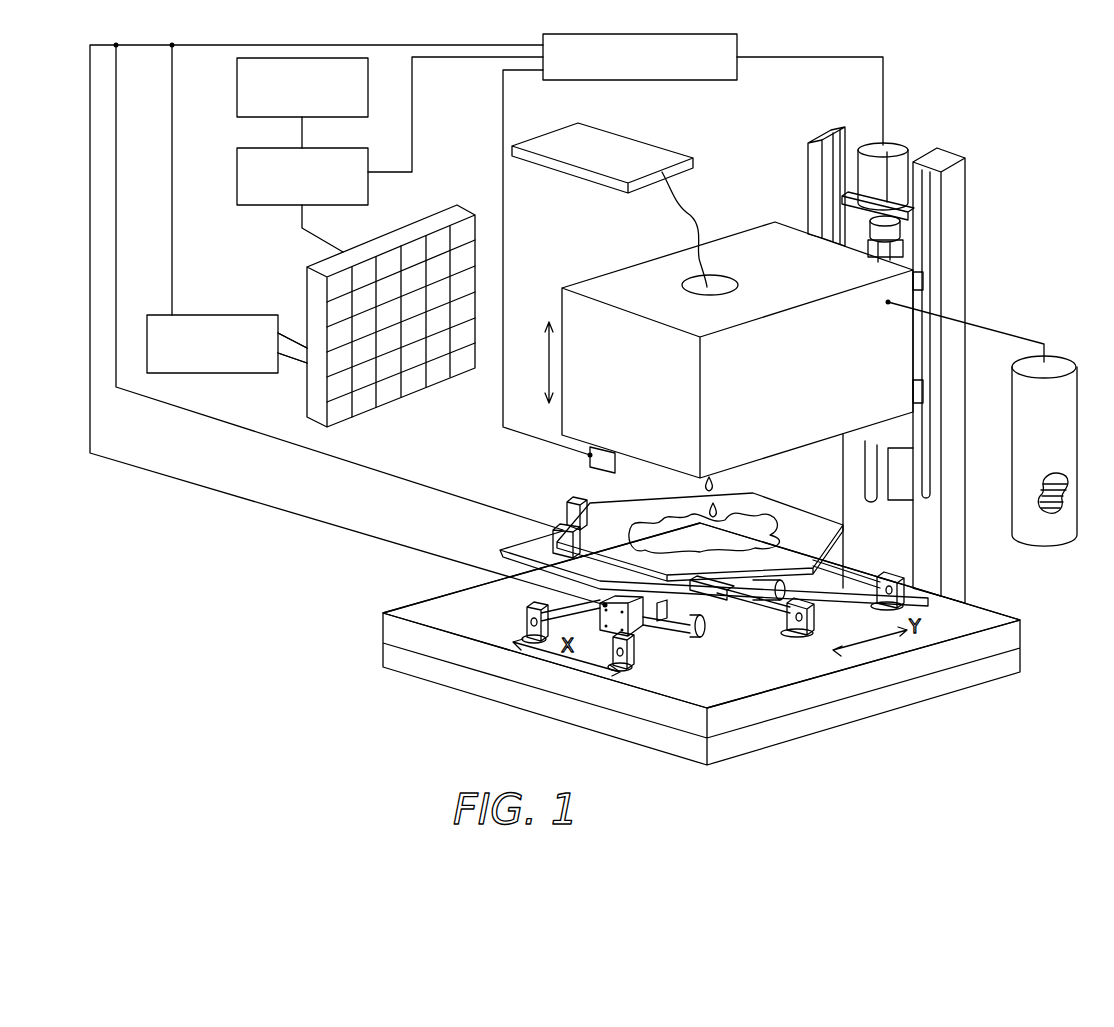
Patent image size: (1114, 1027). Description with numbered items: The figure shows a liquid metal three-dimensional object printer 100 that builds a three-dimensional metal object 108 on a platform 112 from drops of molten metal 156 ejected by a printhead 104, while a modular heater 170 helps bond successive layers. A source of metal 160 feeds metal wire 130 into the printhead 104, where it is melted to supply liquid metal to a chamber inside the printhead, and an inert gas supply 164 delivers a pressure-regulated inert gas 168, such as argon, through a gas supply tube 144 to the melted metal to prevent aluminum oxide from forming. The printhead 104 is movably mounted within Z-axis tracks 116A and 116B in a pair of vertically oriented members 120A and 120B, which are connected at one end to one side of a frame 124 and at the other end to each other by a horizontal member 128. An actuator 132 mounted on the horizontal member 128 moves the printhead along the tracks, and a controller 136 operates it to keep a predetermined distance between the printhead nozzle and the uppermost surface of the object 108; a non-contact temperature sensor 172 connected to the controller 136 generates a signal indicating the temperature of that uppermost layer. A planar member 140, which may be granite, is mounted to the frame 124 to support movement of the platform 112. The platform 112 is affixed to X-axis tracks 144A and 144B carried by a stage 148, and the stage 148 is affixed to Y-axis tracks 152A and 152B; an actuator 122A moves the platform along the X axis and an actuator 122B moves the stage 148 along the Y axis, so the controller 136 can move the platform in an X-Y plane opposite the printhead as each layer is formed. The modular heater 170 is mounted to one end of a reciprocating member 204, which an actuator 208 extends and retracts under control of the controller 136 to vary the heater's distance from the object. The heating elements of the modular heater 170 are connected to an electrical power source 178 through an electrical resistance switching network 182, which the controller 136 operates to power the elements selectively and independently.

The liquid metal 3D object printer 100 is at (970, 129).
The printhead 104 is at (625, 280).
The three-dimensional metal object 108 is at (757, 533).
The platform 112 is at (610, 502).
The Z-axis track 116A is at (808, 160).
The Z-axis track 116B is at (941, 235).
The vertically oriented member 120A is at (813, 199).
The vertically oriented member 120B is at (918, 455).
The actuator 122A is at (553, 532).
The actuator 122B is at (645, 632).
The frame 124 is at (400, 665).
The horizontal member 128 is at (880, 205).
The metal wire 130 is at (692, 220).
The actuator 132 is at (883, 143).
The controller 136 is at (698, 80).
The planar member 140 is at (422, 612).
The gas supply tube 144 is at (1008, 333).
The X-axis track 144A is at (545, 607).
The X-axis track 144B is at (667, 630).
The stage 148 is at (527, 540).
The Y-axis track 152A is at (750, 617).
The Y-axis track 152B is at (868, 571).
The drops of molten metal 156 is at (707, 513).
The source of metal 160 is at (627, 143).
The inert gas supply 164 is at (1012, 440).
The inert gas 168 is at (1057, 510).
The modular heater 170 is at (435, 228).
The non-contact temperature sensor 172 is at (590, 455).
The electrical power source 178 is at (237, 90).
The electrical resistance switching network 182 is at (237, 176).
The reciprocating member 204 is at (292, 362).
The actuator 208 is at (197, 315).